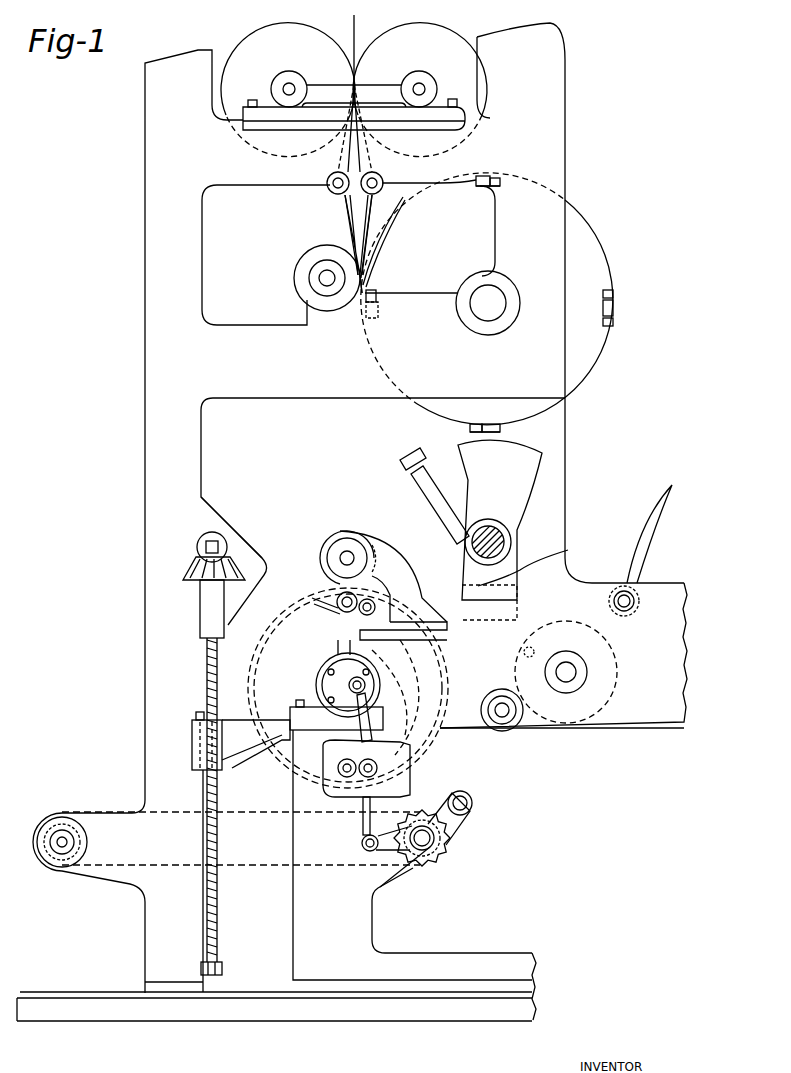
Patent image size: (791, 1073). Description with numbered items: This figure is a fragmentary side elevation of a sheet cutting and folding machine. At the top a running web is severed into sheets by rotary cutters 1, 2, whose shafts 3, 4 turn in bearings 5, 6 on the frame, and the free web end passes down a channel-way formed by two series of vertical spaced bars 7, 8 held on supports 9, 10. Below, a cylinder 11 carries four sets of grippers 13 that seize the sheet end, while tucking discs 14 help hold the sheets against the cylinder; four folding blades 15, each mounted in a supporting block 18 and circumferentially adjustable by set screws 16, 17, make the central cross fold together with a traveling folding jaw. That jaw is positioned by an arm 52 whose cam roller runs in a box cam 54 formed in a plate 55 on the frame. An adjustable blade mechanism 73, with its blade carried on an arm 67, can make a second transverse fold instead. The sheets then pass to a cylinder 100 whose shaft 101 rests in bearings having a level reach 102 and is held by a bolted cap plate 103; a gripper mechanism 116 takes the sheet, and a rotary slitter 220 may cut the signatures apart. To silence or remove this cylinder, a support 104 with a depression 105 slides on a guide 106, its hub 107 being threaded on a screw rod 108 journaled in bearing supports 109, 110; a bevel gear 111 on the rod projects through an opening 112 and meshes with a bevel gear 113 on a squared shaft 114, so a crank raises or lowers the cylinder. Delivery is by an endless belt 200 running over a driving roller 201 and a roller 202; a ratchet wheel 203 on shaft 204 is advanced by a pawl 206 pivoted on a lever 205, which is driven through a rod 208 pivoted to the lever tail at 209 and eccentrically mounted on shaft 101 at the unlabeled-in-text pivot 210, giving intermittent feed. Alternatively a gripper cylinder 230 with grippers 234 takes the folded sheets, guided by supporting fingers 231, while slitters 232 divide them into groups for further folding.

The rotary cutter 1 is at (268, 38).
The rotary cutter 2 is at (392, 33).
The shaft 3 is at (299, 86).
The shaft 4 is at (411, 83).
The bearing 5 is at (279, 80).
The bearing 6 is at (432, 76).
The vertically-disposed spaced-apart bars 7 is at (350, 203).
The vertically-disposed spaced-apart bars 8 is at (368, 217).
The support 9 is at (329, 188).
The support 10 is at (381, 179).
The cylinder 11 is at (601, 258).
The grippers 13 is at (395, 212).
The tucking discs 14 is at (309, 260).
The folding blade 15 is at (362, 306).
The set screw 16 is at (376, 294).
The set screw 17 is at (364, 320).
The supporting block 18 is at (376, 303).
The arm 52 is at (410, 716).
The box cam 54 is at (560, 568).
The plate 55 is at (365, 924).
The arm 67 is at (435, 490).
The folding blade mechanism 73 is at (528, 495).
The cylinder 100 is at (280, 635).
The shaft 101 is at (340, 683).
The bearing with horizontal reach 102 is at (305, 730).
The bolted cap plate 103 is at (308, 686).
The support 104 is at (292, 745).
The depression 105 is at (248, 725).
The guide 106 is at (196, 782).
The hub 107 is at (223, 758).
The screw rod 108 is at (218, 665).
The bearing support 109 is at (222, 972).
The bearing support 110 is at (200, 615).
The bevel gear 111 is at (195, 565).
The opening 112 is at (240, 588).
The bevel gear 113 is at (238, 520).
The shaft 114 is at (210, 545).
The gripper mechanism 116 is at (420, 775).
The endless delivery belt 200 is at (236, 868).
The driving roller 201 is at (462, 840).
The roller 202 is at (50, 822).
The ratchet wheel 203 is at (452, 858).
The shaft 204 is at (428, 860).
The lever 205 is at (460, 832).
The pawl 206 is at (435, 802).
The rod 208 is at (363, 828).
The pivot 209 is at (360, 845).
The pivot pin 210 is at (366, 685).
The rotary slitter 220 is at (357, 543).
The gripper cylinder 230 is at (588, 713).
The supporting finger 231 is at (652, 557).
The slitter 232 is at (515, 727).
The grippers 234 is at (615, 602).